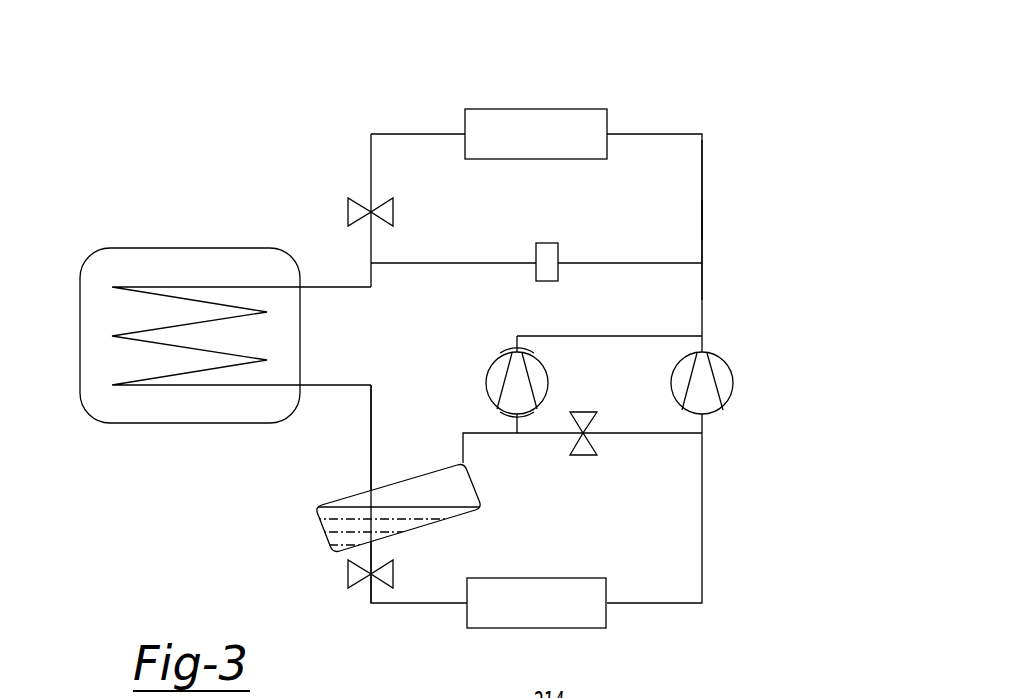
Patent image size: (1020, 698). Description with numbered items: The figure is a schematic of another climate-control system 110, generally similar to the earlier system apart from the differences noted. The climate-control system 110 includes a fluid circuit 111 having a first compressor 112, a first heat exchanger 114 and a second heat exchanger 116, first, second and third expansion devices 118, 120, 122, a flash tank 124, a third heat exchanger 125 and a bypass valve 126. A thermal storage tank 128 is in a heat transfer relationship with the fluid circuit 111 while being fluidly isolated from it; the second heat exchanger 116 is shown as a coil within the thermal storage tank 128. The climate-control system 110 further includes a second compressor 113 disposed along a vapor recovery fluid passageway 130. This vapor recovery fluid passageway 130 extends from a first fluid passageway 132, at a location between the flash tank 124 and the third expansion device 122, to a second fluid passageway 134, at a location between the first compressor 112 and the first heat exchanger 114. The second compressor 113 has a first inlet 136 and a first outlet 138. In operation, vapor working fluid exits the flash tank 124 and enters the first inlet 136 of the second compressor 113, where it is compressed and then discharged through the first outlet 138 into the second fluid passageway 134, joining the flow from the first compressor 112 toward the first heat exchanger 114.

The climate-control system 110 is at (750, 108).
The fluid circuit 111 is at (731, 196).
The first compressor 112 is at (734, 392).
The second compressor 113 is at (484, 385).
The first heat exchanger 114 is at (534, 109).
The second heat exchanger 116 is at (205, 287).
The first expansion device 118 is at (346, 211).
The second expansion device 120 is at (347, 573).
The third expansion device 122 is at (583, 458).
The flash tank 124 is at (303, 508).
The third heat exchanger 125 is at (518, 578).
The bypass valve 126 is at (546, 243).
The thermal storage tank 128 is at (72, 244).
The vapor recovery fluid passageway 130 is at (630, 330).
The first fluid passageway 132 is at (456, 426).
The second fluid passageway 134 is at (706, 217).
The first inlet 136 is at (517, 416).
The first outlet 138 is at (515, 351).